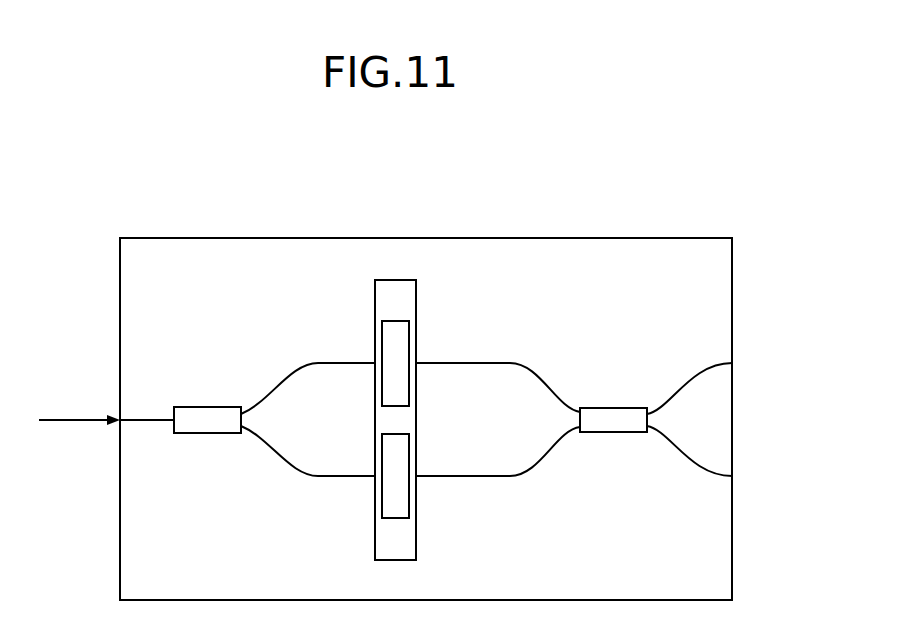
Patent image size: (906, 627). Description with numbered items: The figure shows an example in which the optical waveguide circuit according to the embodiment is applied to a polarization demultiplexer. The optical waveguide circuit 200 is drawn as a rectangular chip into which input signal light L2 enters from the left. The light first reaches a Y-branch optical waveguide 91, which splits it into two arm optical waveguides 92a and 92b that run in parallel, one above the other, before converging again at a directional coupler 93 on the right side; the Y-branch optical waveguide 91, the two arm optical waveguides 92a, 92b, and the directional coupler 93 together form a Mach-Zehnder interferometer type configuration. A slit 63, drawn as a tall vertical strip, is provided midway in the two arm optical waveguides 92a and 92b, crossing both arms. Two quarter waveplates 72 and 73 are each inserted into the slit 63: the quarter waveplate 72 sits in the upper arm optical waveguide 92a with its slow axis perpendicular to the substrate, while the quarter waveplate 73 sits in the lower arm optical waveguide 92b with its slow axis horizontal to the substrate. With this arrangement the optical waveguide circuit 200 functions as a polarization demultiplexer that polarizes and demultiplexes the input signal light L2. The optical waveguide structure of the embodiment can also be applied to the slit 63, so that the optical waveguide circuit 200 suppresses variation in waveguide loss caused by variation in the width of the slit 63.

The optical waveguide circuit 200 is at (700, 218).
The input signal light L2 is at (106, 407).
The Y-branch optical waveguide 91 is at (212, 406).
The arm optical waveguide 92a is at (330, 360).
The arm optical waveguide 92b is at (330, 478).
The slit 63 is at (390, 303).
The quarter waveplate 72 is at (409, 340).
The quarter waveplate 73 is at (409, 502).
The directional coupler 93 is at (615, 407).